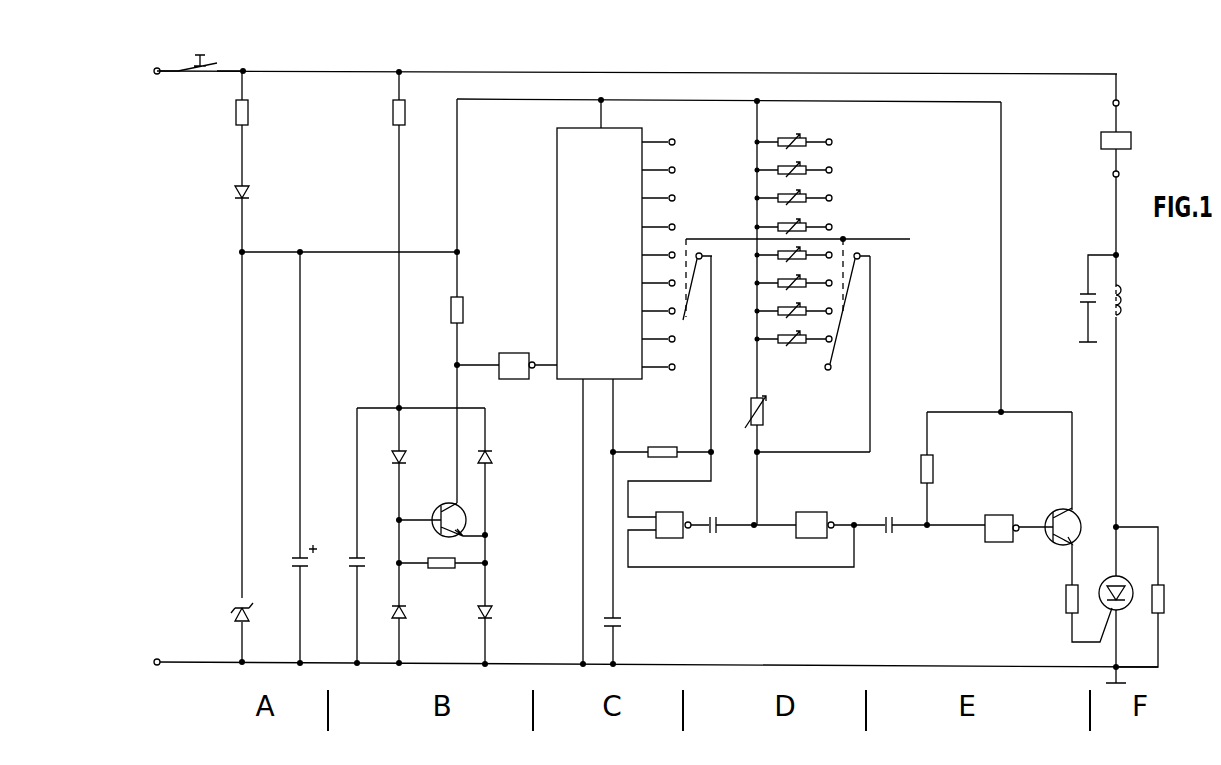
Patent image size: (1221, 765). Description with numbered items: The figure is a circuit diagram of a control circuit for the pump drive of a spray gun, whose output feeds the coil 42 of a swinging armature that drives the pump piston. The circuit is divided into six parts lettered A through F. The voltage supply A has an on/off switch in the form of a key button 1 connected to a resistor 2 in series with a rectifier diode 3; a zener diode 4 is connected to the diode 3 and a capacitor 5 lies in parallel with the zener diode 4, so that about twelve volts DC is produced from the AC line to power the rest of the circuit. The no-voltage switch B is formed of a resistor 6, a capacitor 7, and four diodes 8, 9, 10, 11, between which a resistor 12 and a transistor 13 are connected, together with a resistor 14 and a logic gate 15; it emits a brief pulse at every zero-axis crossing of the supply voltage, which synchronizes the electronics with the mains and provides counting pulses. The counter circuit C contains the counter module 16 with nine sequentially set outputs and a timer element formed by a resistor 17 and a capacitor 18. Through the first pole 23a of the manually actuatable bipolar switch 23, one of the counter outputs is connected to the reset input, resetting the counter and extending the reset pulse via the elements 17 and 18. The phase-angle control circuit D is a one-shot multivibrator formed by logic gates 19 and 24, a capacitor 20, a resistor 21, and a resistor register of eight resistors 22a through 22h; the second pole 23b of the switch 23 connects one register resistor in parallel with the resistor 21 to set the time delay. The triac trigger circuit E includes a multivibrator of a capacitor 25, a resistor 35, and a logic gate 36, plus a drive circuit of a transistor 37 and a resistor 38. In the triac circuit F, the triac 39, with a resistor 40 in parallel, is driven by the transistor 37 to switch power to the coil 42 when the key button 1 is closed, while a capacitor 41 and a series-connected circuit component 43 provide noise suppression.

The key button 1 is at (215, 69).
The resistor 2 is at (249, 115).
The rectifier diode 3 is at (250, 190).
The zener diode 4 is at (249, 610).
The capacitor 5 is at (298, 555).
The resistor 6 is at (406, 115).
The capacitor 7 is at (356, 555).
The diode 8 is at (406, 460).
The diode 9 is at (492, 460).
The diode 10 is at (406, 615).
The diode 11 is at (492, 615).
The resistor 12 is at (436, 557).
The transistor 13 is at (460, 508).
The resistor 14 is at (464, 312).
The logic gate 15 is at (525, 338).
The counter module 16 is at (562, 126).
The resistor 17 is at (674, 436).
The capacitor 18 is at (618, 616).
The logic gate 19 is at (668, 511).
The capacitor 20 is at (716, 522).
The resistor 21 is at (763, 415).
The resistor 22a is at (806, 138).
The resistor 22h is at (792, 346).
The bipolar control switch 23 is at (910, 239).
The first pole 23a is at (693, 230).
The second pole 23b is at (863, 226).
The logic gate 24 is at (822, 498).
The capacitor 25 is at (888, 516).
The resistor 35 is at (934, 472).
The logic gate 36 is at (996, 513).
The transistor 37 is at (1075, 516).
The resistor 38 is at (1066, 596).
The triac 39 is at (1126, 580).
The resistor 40 is at (1164, 598).
The capacitor 41 is at (1086, 292).
The coil 42 is at (1122, 300).
The circuit component 43 is at (1131, 135).